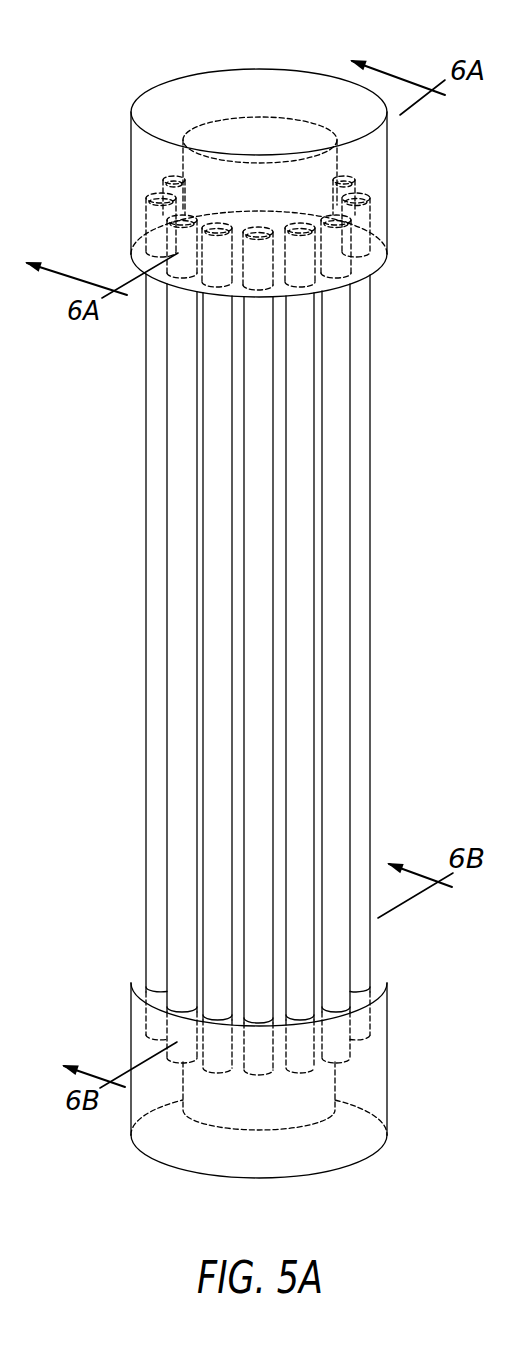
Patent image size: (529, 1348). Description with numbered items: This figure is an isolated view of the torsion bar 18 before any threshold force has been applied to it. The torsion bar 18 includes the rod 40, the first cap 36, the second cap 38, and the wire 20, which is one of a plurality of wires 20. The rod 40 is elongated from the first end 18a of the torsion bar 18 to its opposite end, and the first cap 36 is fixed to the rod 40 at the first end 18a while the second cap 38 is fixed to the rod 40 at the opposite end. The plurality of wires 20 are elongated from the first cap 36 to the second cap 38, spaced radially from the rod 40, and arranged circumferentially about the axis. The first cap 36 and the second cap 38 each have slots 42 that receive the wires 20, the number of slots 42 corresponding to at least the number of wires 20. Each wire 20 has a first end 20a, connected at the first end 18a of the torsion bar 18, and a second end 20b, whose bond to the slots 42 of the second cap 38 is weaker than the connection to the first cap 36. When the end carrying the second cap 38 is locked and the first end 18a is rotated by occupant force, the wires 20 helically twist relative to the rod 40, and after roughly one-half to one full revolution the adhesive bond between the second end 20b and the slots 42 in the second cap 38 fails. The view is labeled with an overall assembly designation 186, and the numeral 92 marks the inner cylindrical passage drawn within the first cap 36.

The tube bundle assembly 186 is at (155, 72).
The second cap 38 is at (283, 69).
The rod 40 is at (243, 118).
The slots 42 is at (215, 212).
The second end of the wire 20b is at (215, 245).
The wire 20 is at (258, 522).
The torsion bar 18 is at (135, 536).
The first end of the torsion bar 18a is at (116, 1048).
The first cap 36 is at (345, 1168).
The inner cylindrical passage 92 is at (182, 1062).
The first end of the wire 20a is at (180, 1032).